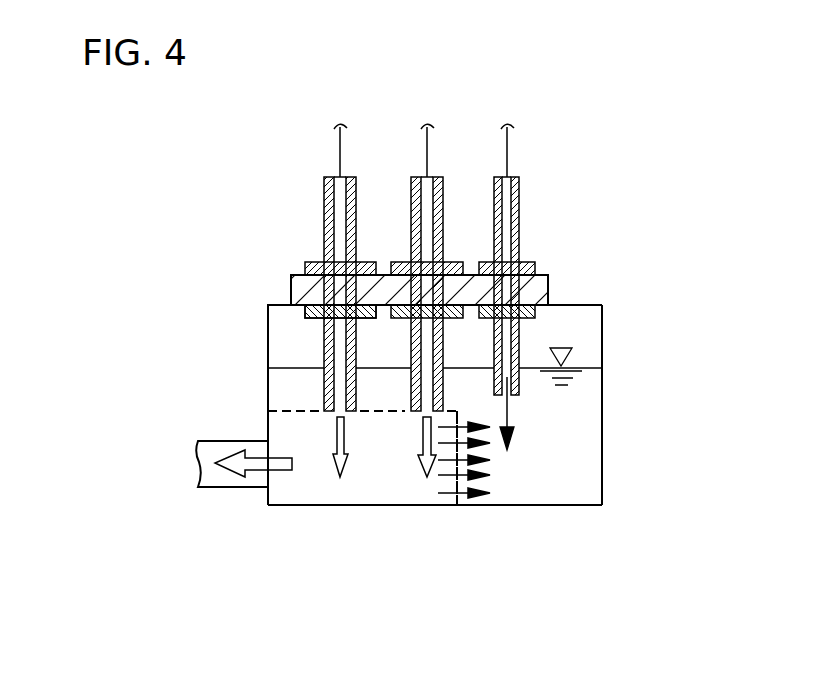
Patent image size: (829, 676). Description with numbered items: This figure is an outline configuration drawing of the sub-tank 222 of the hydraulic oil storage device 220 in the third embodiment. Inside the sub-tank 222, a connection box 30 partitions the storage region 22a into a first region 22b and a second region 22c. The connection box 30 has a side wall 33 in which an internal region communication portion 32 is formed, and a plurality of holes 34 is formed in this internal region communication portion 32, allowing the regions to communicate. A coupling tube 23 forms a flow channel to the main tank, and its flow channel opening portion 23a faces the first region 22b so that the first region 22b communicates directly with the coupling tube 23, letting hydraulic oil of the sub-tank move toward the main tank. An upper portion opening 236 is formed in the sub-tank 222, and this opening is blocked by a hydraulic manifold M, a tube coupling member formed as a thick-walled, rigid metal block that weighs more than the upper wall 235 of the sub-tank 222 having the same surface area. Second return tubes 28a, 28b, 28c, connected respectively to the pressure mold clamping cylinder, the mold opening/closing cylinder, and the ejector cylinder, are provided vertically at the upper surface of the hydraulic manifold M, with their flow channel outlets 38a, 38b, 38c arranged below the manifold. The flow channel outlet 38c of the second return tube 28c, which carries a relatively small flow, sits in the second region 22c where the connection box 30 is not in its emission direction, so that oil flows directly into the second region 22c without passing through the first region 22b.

The hydraulic oil storage device 220 is at (440, 345).
The second return tube 28a is at (323, 203).
The second return tube 28b is at (408, 200).
The second return tube 28c is at (492, 205).
The upper portion opening 236 is at (315, 306).
The upper wall 235 is at (284, 302).
The hydraulic manifold M is at (550, 290).
The storage region 22a is at (590, 342).
The first region 22b is at (369, 490).
The second region 22c is at (588, 482).
The sub-tank 222 is at (288, 505).
The connection box 30 is at (293, 400).
The coupling tube 23 is at (230, 487).
The flow channel opening portion 23a is at (270, 441).
The flow channel outlet 38a is at (332, 412).
The flow channel outlet 38b is at (418, 412).
The flow channel outlet 38c is at (513, 395).
The internal region communication portion 32 is at (459, 512).
The side wall 33 is at (453, 481).
The holes 34 is at (460, 485).